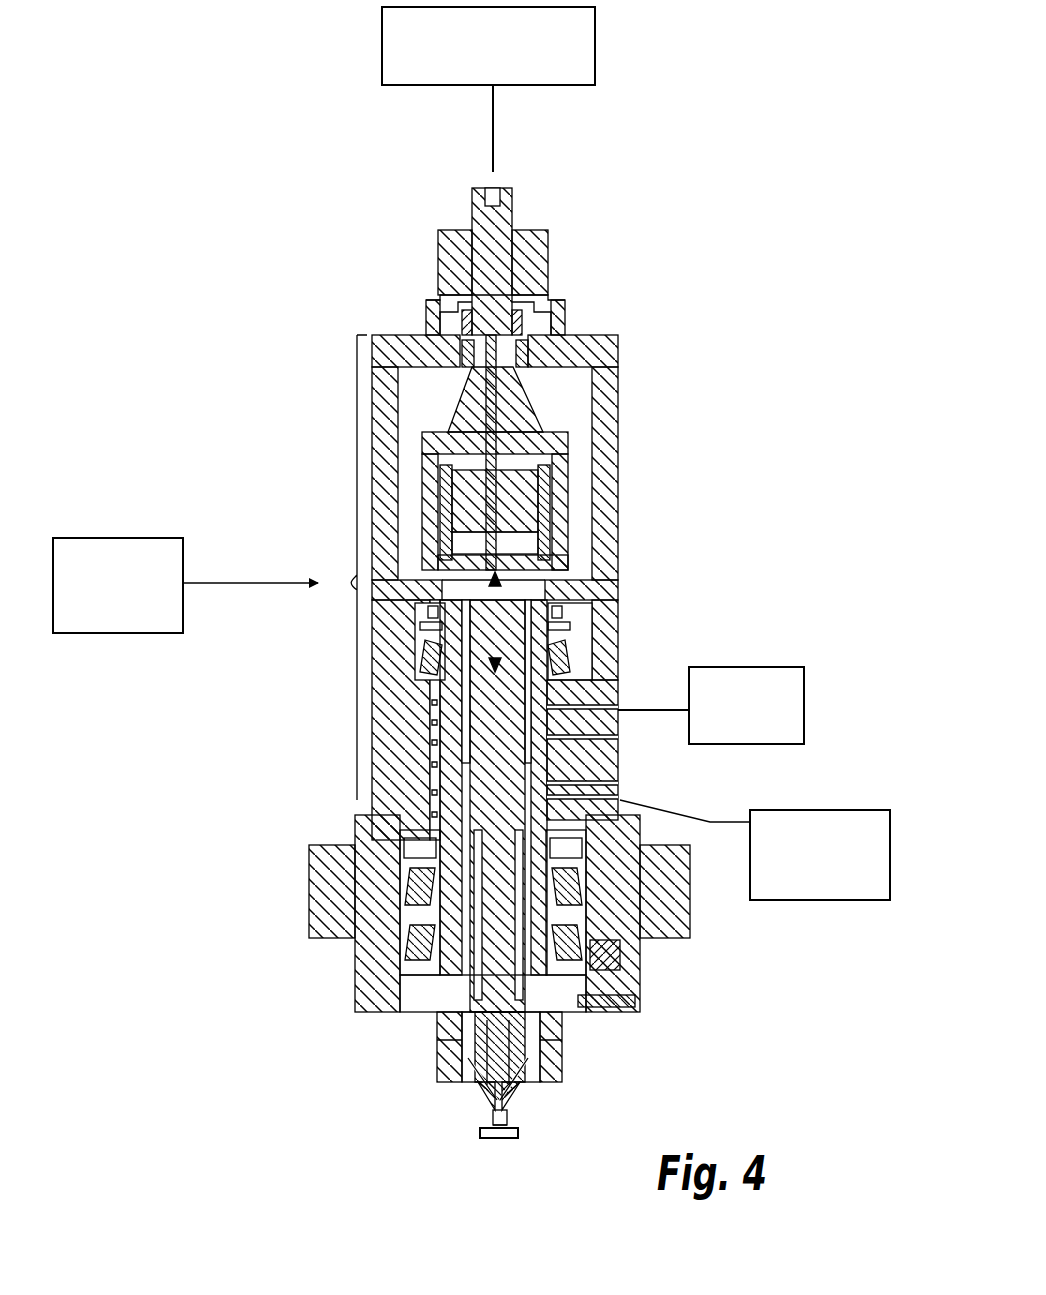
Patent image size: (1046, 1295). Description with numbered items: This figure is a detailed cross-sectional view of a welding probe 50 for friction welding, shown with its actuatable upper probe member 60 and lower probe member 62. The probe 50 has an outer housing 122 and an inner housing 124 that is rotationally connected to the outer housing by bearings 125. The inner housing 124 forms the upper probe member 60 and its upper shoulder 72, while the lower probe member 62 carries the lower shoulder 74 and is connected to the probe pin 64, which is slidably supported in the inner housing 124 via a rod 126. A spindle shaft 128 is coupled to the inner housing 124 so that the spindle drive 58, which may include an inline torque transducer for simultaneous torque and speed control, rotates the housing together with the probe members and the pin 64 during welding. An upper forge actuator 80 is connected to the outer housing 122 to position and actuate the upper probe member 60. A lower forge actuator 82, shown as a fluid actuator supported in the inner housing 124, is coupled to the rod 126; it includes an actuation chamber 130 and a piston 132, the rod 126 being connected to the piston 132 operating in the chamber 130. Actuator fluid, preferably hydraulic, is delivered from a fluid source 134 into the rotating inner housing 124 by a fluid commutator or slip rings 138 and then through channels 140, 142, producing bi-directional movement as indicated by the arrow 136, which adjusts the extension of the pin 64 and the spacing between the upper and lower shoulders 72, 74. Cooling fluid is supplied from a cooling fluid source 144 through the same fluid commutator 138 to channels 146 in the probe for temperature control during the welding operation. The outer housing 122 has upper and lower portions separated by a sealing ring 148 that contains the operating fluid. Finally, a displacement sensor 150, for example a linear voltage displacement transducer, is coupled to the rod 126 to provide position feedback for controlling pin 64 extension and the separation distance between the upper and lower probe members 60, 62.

The welding probe 50 is at (632, 426).
The spindle drive 58 is at (604, 62).
The upper probe member 60 is at (522, 1085).
The lower probe member 62 is at (518, 1134).
The probe pin 64 is at (508, 1119).
The upper shoulder 72 is at (478, 1116).
The lower shoulder 74 is at (488, 1128).
The upper forge actuator 80 is at (138, 538).
The lower forge actuator 82 is at (540, 502).
The outer housing 122 is at (388, 335).
The inner housing 124 is at (598, 766).
The bearings 125 is at (512, 330).
The rod 126 is at (605, 824).
The spindle shaft 128 is at (495, 218).
The actuation chamber 130 is at (450, 562).
The piston 132 is at (430, 468).
The fluid source 134 is at (768, 667).
The arrow 136 is at (420, 640).
The fluid commutator 138 is at (430, 720).
The channel 140 is at (578, 578).
The channel 142 is at (432, 505).
The cooling fluid source 144 is at (828, 808).
The channels 146 is at (612, 1005).
The sealing ring 148 is at (372, 590).
The displacement sensor 150 is at (525, 385).